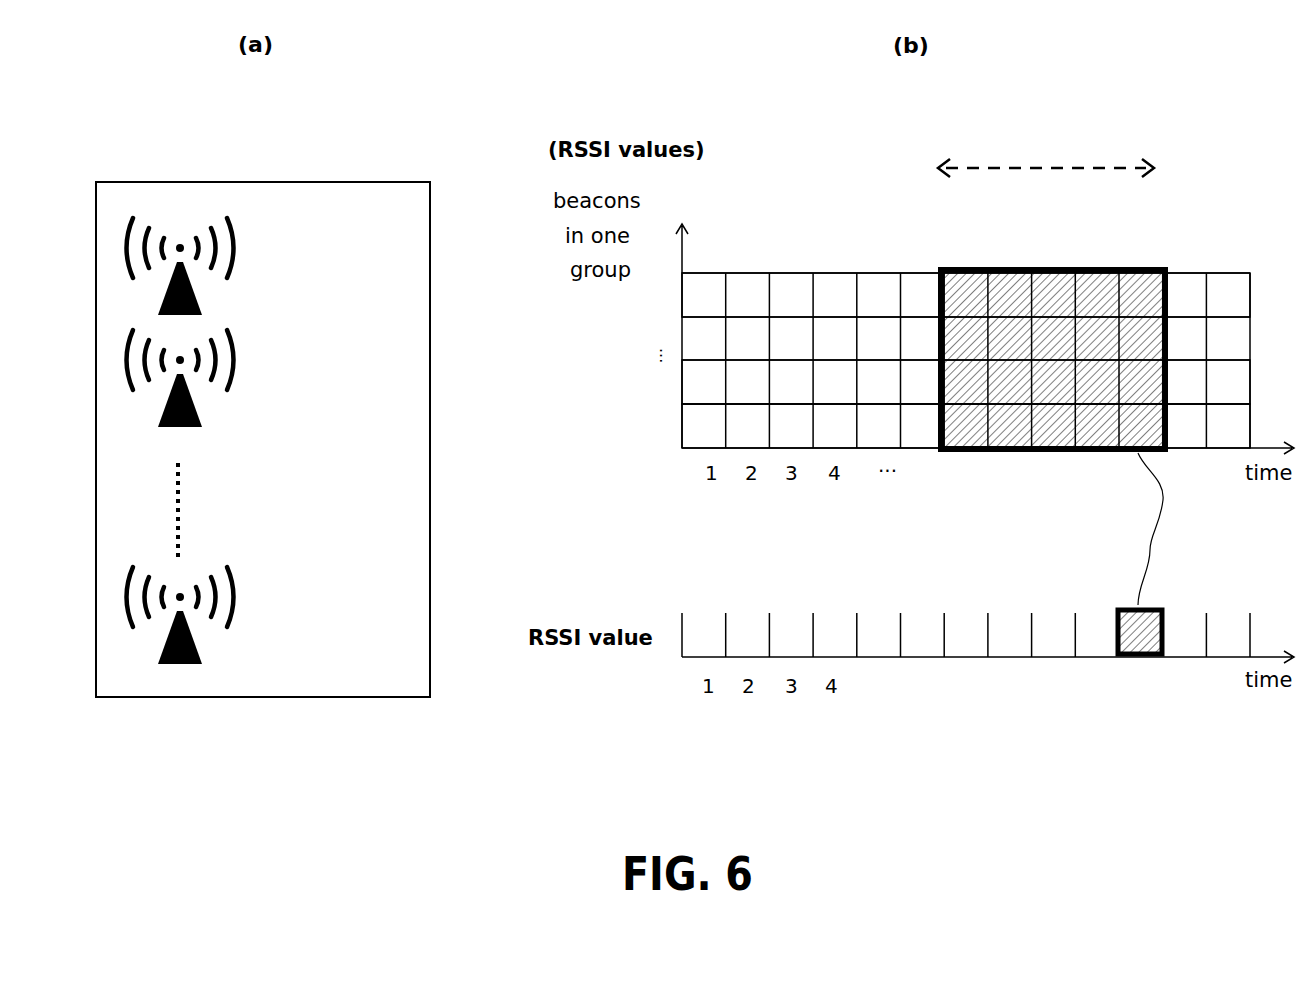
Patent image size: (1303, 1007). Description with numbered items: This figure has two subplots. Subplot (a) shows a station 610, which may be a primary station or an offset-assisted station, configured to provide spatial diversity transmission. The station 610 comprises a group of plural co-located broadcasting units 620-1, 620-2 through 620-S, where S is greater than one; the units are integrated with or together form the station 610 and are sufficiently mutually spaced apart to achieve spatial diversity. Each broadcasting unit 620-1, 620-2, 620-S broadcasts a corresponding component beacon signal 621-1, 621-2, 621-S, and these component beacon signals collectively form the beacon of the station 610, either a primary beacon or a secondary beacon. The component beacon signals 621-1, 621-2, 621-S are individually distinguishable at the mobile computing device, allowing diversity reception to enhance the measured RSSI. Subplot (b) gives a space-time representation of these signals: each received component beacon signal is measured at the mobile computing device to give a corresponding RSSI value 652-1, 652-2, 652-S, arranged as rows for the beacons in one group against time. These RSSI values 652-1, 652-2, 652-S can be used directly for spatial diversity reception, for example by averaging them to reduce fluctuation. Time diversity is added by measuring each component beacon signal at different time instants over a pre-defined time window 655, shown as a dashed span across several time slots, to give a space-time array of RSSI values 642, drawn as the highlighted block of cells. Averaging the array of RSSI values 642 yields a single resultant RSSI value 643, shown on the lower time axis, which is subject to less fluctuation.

The station 610 is at (318, 182).
The broadcasting unit 620-1 is at (198, 300).
The broadcasting unit 620-2 is at (198, 409).
The broadcasting unit 620-S is at (198, 645).
The component beacon signal 621-1 is at (238, 218).
The component beacon signal 621-2 is at (238, 332).
The component beacon signal 621-S is at (238, 564).
The space-time array of RSSI values 642 is at (1147, 267).
The resultant RSSI value 643 is at (1140, 657).
The RSSI value 652-1 is at (634, 435).
The RSSI value 652-2 is at (634, 385).
The RSSI value 652-S is at (634, 305).
The time window 655 is at (1033, 168).